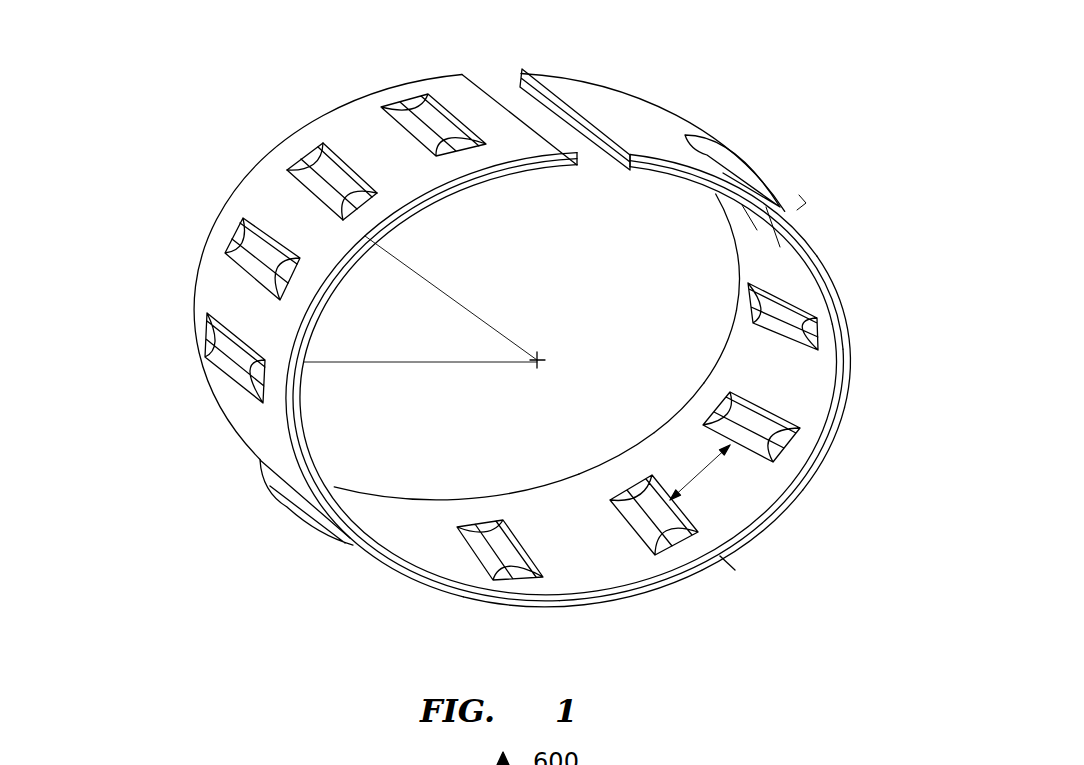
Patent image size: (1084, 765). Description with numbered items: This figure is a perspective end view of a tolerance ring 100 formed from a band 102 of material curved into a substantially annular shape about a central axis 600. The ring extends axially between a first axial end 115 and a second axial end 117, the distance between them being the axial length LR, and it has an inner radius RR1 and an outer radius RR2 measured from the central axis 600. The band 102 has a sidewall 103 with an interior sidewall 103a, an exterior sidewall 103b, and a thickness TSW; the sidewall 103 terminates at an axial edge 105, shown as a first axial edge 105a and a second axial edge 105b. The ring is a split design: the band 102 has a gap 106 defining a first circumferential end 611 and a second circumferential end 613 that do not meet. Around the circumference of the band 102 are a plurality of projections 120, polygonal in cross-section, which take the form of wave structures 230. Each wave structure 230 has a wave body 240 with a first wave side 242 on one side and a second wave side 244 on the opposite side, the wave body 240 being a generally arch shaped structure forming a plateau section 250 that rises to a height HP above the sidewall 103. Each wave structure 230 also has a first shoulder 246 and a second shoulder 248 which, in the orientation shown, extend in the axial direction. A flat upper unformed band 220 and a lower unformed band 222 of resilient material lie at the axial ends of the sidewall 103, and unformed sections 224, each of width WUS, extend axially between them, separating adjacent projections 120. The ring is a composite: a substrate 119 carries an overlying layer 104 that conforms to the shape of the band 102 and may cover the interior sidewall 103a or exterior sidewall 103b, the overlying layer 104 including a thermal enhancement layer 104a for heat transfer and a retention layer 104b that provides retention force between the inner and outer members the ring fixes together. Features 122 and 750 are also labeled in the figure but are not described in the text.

The tolerance ring 100 is at (153, 95).
The gap 106 is at (496, 70).
The projections 120 is at (403, 103).
The second wave side 244 is at (350, 160).
The wave body 240 is at (330, 152).
The wave structure 230 is at (293, 165).
The first wave side 242 is at (300, 183).
The first shoulder 246 is at (240, 250).
The second shoulder 248 is at (230, 282).
The exterior sidewall 103b is at (192, 318).
The plateau section 250 is at (212, 356).
The unformed sections 224 is at (240, 410).
The first circumferential end 611 is at (576, 168).
The second circumferential end 613 is at (608, 170).
The retention layer 104b is at (373, 557).
The thermal enhancement layer 104a is at (607, 603).
The axial edge 105 is at (799, 551).
The first axial edge 105a is at (727, 563).
The substrate 119 is at (773, 523).
The sidewall 103 is at (845, 297).
The sidewall thickness TSW is at (817, 250).
The band 102 is at (850, 326).
The axial length LR is at (840, 422).
The overlying layer 104 is at (850, 387).
The ring rim 122 is at (850, 355).
The interior sidewall 103a is at (517, 498).
The lower unformed band 222 is at (610, 480).
The second axial edge 105b is at (653, 430).
The upper unformed band 220 is at (707, 377).
The first axial end 115 is at (727, 310).
The central axis 600 is at (539, 356).
The inner radius RR1 is at (410, 362).
The outer radius RR2 is at (458, 305).
The second axial end 117 is at (457, 597).
The paddle 750 is at (610, 552).
The unformed section width WUS is at (703, 468).
The projection height HP is at (806, 203).